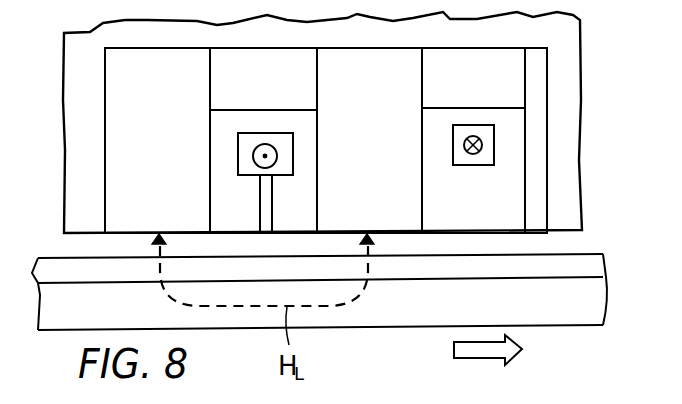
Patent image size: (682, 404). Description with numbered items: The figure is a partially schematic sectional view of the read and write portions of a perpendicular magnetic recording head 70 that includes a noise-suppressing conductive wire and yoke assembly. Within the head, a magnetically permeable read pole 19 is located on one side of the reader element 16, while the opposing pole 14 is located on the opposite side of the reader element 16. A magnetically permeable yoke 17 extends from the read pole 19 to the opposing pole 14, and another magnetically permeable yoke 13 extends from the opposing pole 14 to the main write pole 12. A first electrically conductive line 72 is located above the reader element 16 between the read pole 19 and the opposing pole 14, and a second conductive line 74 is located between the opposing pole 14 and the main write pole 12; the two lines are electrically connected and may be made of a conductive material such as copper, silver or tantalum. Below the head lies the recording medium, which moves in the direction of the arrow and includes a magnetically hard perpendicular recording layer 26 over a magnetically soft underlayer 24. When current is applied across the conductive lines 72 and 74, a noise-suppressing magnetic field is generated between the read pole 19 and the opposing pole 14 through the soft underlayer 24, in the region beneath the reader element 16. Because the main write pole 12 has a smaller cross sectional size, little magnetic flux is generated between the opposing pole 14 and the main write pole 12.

The perpendicular magnetic recording head 70 is at (78, 56).
The read pole 19 is at (172, 172).
The yoke 17 is at (279, 93).
The opposing pole 14 is at (385, 170).
The yoke 13 is at (487, 93).
The main write pole 12 is at (534, 178).
The first conductive line 72 is at (286, 168).
The reader element 16 is at (262, 222).
The second conductive line 74 is at (485, 155).
The recording layer 26 is at (593, 263).
The soft underlayer 24 is at (593, 307).